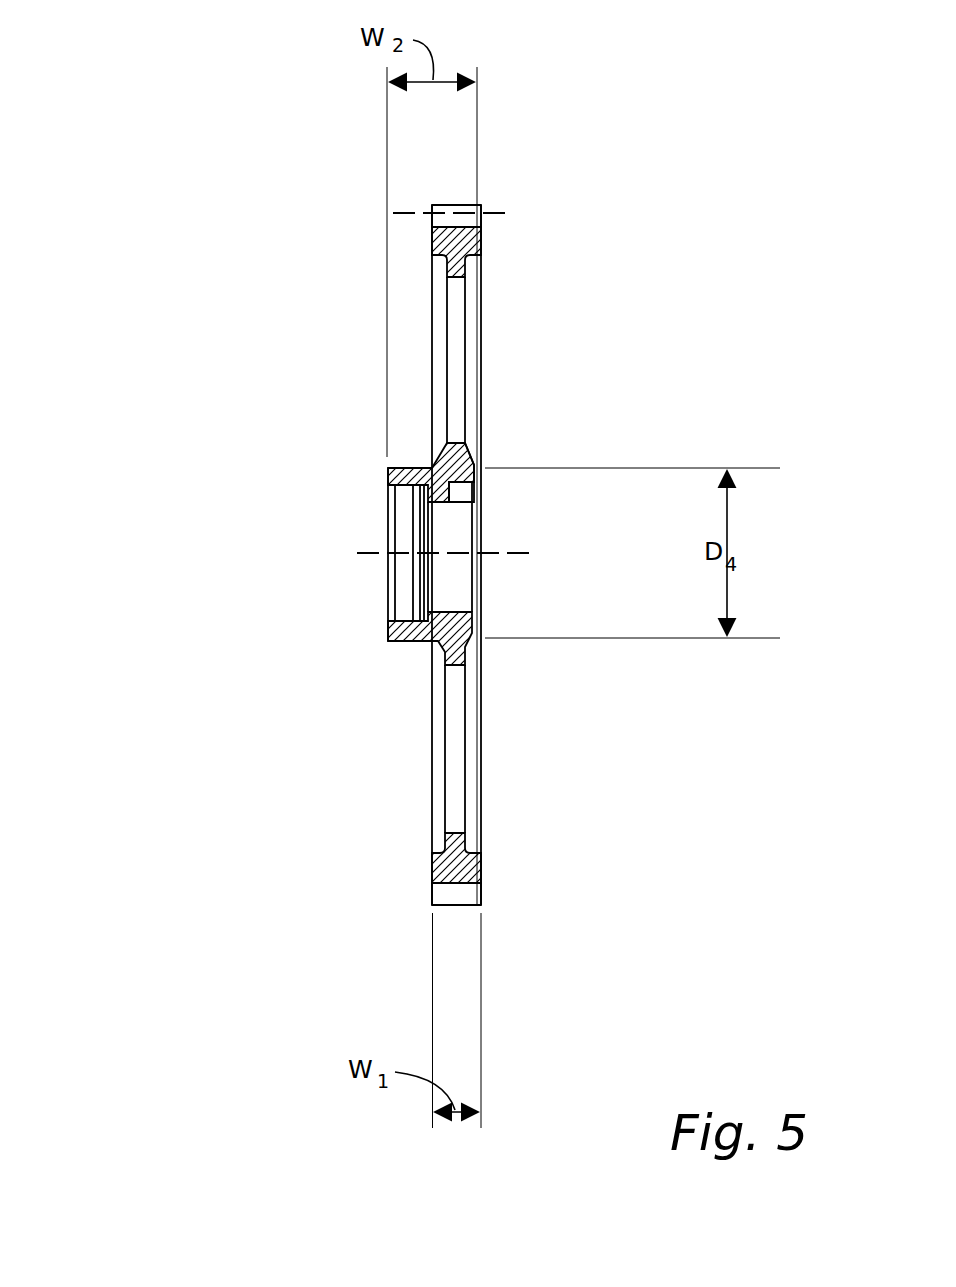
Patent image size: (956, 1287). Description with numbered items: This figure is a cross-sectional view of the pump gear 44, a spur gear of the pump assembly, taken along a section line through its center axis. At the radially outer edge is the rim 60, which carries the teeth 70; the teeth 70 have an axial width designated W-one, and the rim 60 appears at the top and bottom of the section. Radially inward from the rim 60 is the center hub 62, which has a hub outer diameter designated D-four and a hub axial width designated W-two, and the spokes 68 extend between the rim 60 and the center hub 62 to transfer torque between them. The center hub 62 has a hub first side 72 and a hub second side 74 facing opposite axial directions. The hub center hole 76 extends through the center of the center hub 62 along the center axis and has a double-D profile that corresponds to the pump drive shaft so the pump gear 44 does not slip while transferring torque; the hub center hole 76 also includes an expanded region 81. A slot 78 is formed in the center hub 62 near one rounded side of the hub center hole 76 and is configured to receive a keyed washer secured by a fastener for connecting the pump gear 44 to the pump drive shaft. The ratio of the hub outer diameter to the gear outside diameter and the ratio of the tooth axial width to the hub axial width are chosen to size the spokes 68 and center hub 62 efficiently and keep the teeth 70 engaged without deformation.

The pump gear 44 is at (168, 130).
The rim 60 is at (482, 253).
The center hub 62 is at (468, 626).
The spokes 68 is at (455, 348).
The teeth 70 is at (480, 204).
The hub first side 72 is at (484, 478).
The hub second side 74 is at (386, 467).
The hub center hole 76 is at (455, 582).
The slot 78 is at (461, 500).
The expanded region 81 is at (400, 598).